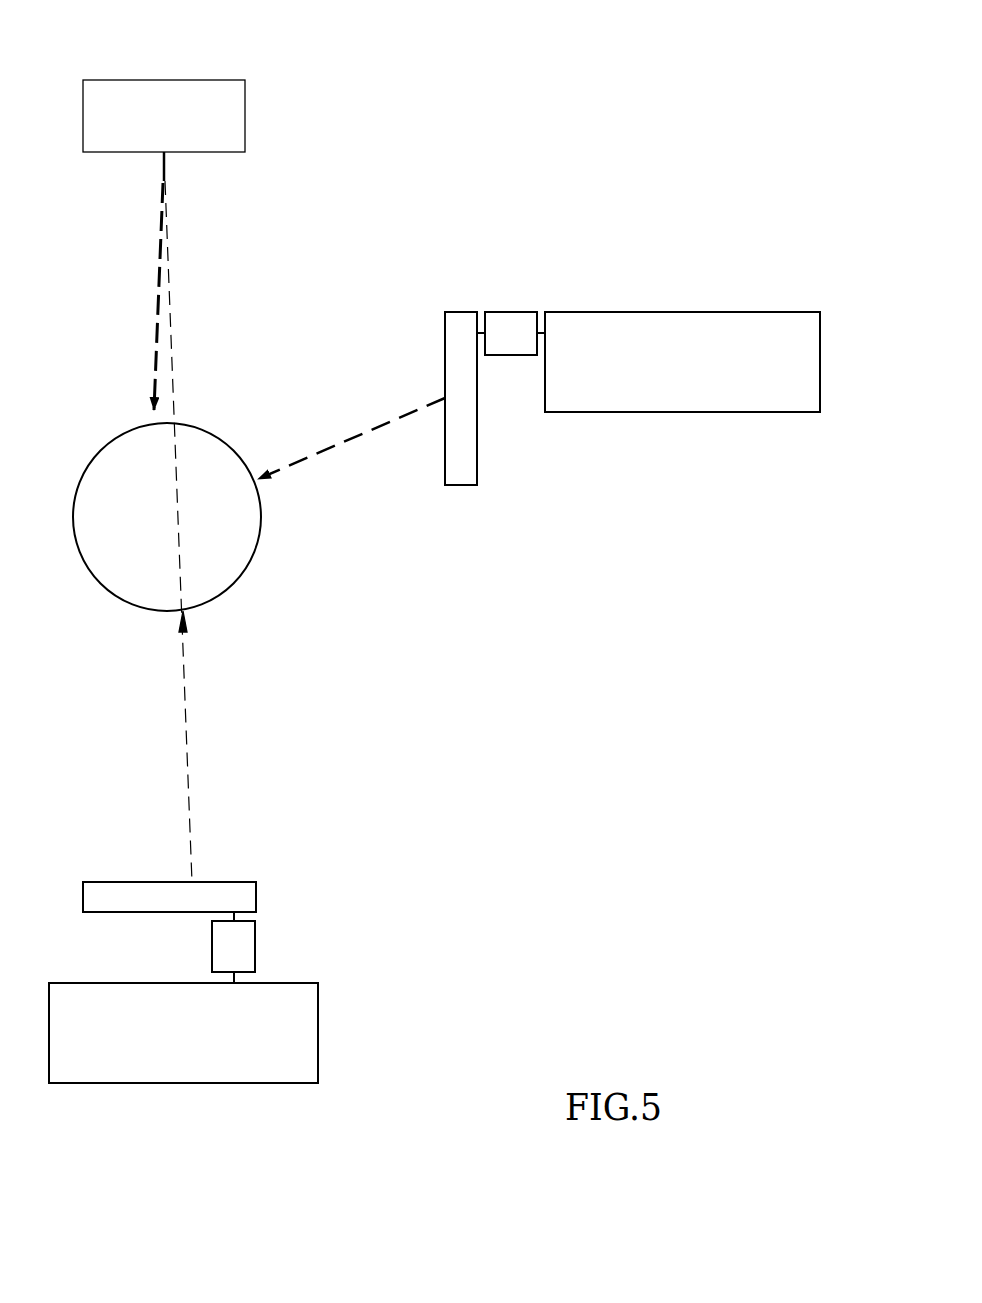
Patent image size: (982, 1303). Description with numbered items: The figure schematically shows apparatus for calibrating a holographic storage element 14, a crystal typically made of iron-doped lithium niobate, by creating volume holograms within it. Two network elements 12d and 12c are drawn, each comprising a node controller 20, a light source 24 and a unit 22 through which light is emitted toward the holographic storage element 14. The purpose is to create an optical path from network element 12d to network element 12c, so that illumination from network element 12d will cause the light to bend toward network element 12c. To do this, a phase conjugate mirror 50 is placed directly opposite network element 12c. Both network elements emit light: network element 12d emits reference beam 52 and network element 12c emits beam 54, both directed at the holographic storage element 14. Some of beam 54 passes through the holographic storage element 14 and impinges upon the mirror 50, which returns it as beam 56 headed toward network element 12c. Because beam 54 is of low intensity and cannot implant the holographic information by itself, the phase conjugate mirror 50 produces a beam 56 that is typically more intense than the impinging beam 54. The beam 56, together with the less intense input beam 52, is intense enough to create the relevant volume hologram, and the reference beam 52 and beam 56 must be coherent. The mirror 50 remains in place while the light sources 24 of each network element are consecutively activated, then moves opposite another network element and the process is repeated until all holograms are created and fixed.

The phase conjugate mirror 50 is at (173, 80).
The light beam 56 is at (158, 310).
The light beam 54 is at (172, 377).
The holographic storage element 14 is at (72, 543).
The light beam 52 is at (355, 437).
The unit 22 is at (457, 485).
The light source 24 is at (513, 312).
The node controller 20 is at (655, 412).
The network element 12d is at (627, 265).
The network element 12c is at (437, 937).